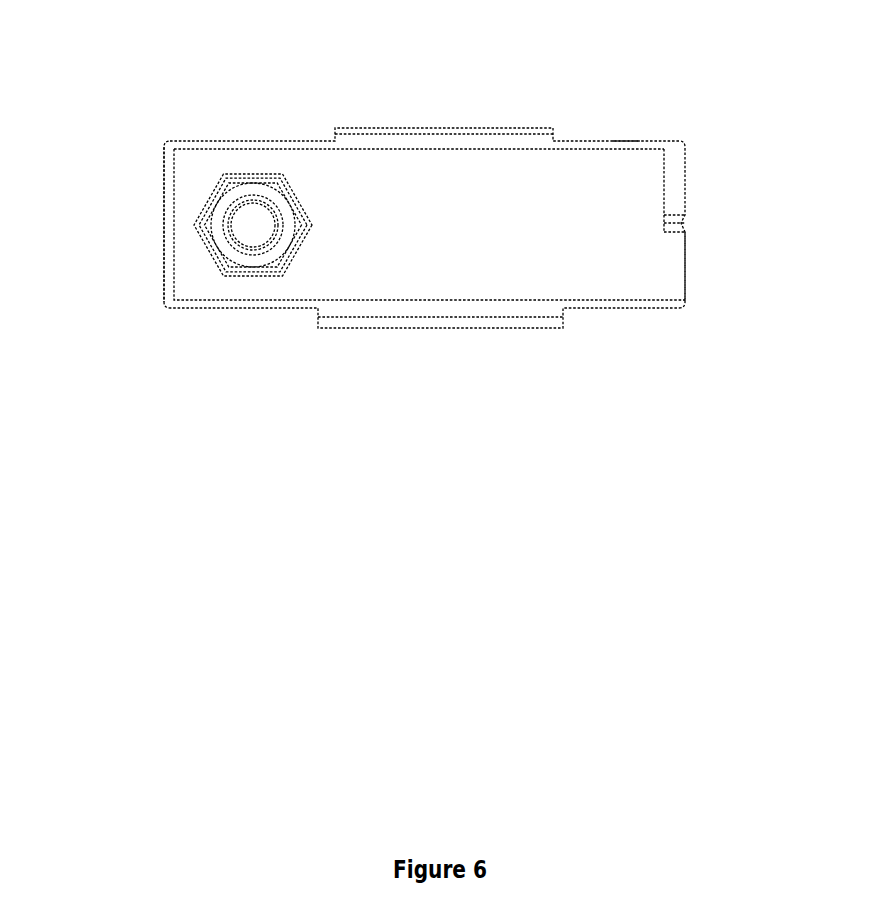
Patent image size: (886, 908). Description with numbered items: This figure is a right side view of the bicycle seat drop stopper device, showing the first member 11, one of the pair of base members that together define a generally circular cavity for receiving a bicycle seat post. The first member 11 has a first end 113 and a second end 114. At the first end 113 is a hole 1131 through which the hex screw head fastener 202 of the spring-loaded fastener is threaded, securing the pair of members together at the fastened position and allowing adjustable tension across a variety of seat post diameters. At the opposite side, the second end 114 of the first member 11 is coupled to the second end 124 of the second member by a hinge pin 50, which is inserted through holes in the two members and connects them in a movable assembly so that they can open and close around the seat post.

The first member 11 is at (296, 329).
The first end 113 is at (158, 217).
The hole 1131 is at (213, 269).
The hex screw head fastener 202 is at (252, 184).
The hinge pin 50 is at (626, 130).
The second end 124 is at (702, 187).
The second end 114 is at (702, 272).